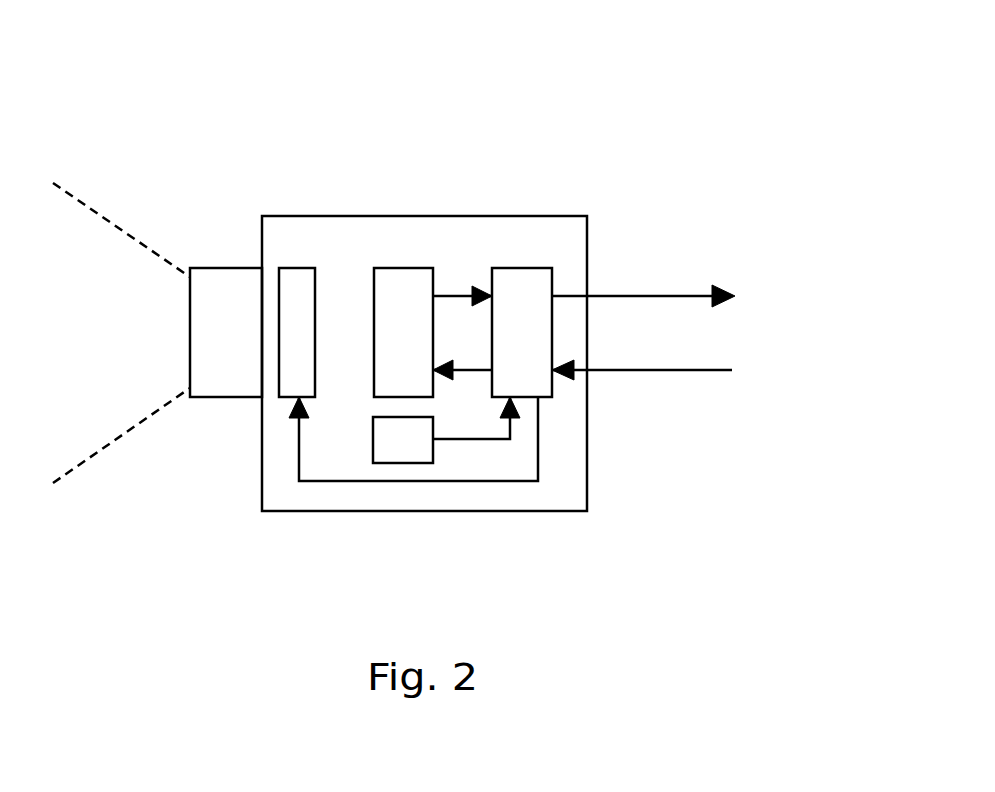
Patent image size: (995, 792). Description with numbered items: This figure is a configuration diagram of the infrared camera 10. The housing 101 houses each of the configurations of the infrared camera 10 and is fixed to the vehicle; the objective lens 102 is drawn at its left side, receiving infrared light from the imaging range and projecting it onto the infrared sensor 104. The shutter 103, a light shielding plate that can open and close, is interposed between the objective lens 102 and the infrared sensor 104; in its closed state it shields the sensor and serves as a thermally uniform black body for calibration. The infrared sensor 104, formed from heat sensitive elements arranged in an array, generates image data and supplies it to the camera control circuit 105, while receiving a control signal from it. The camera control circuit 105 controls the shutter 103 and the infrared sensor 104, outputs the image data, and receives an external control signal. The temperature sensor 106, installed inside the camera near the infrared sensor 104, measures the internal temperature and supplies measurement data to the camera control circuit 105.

The infrared camera 10 is at (303, 107).
The housing 101 is at (568, 213).
The objective lens 102 is at (222, 267).
The shutter 103 is at (298, 267).
The infrared sensor 104 is at (402, 267).
The camera control circuit 105 is at (520, 267).
The temperature sensor 106 is at (403, 465).